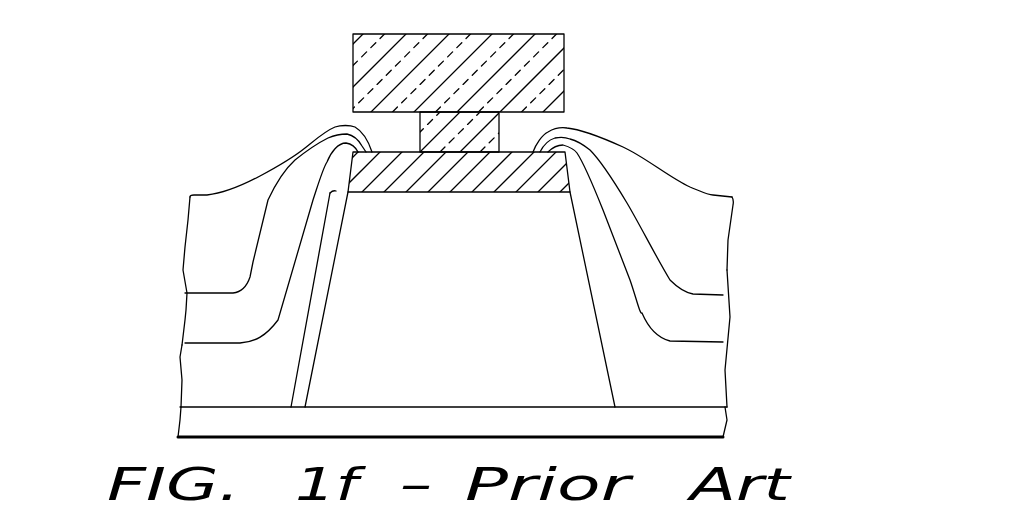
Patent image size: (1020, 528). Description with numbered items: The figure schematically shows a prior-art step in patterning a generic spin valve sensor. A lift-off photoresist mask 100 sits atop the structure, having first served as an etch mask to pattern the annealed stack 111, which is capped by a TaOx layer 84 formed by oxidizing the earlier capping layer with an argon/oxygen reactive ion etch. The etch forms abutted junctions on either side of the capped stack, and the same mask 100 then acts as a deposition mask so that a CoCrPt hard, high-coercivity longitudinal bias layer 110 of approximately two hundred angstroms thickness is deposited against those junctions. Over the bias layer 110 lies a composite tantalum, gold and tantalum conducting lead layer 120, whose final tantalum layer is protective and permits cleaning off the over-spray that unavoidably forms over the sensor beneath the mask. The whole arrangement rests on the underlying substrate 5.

The substrate 5 is at (707, 423).
The TaOx layer 84 is at (545, 172).
The lift-off photoresist mask 100 is at (555, 68).
The longitudinal bias layer 110 is at (700, 368).
The annealed stack 111 is at (306, 300).
The conducting lead layer 120 is at (168, 195).